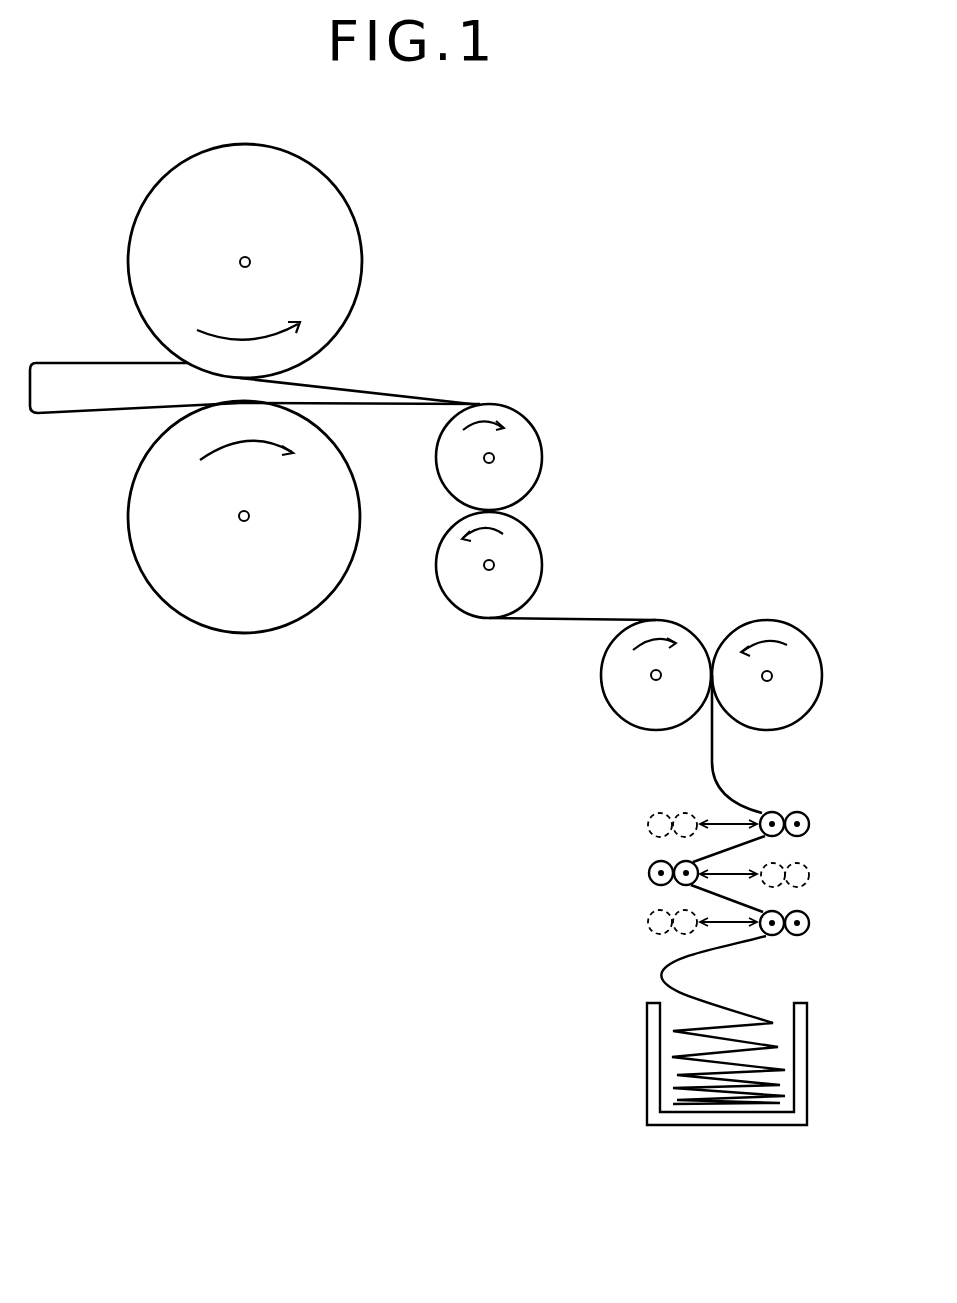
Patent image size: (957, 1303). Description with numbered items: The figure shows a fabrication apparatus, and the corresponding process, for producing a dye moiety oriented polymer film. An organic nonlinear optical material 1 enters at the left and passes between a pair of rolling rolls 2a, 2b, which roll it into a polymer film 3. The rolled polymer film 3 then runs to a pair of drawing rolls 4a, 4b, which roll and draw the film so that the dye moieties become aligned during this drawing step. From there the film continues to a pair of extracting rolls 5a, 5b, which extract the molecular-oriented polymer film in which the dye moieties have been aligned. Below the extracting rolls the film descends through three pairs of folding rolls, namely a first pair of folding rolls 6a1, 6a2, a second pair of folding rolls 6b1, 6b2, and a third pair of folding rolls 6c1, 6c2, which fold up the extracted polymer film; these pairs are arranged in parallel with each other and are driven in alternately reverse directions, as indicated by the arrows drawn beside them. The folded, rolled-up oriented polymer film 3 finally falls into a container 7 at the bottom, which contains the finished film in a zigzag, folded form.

The organic nonlinear optical material 1 is at (63, 387).
The rolling roll 2a is at (332, 230).
The rolling roll 2b is at (200, 603).
The polymer film 3 is at (413, 388).
The drawing roll 4a is at (530, 450).
The drawing roll 4b is at (460, 593).
The extracting roll 5a is at (630, 703).
The extracting roll 5b is at (805, 662).
The folding roll 6a1 is at (787, 806).
The folding roll 6a2 is at (809, 813).
The folding roll 6b1 is at (649, 868).
The folding roll 6b2 is at (674, 865).
The folding roll 6c1 is at (778, 937).
The folding roll 6c2 is at (808, 938).
The container 7 is at (647, 1048).